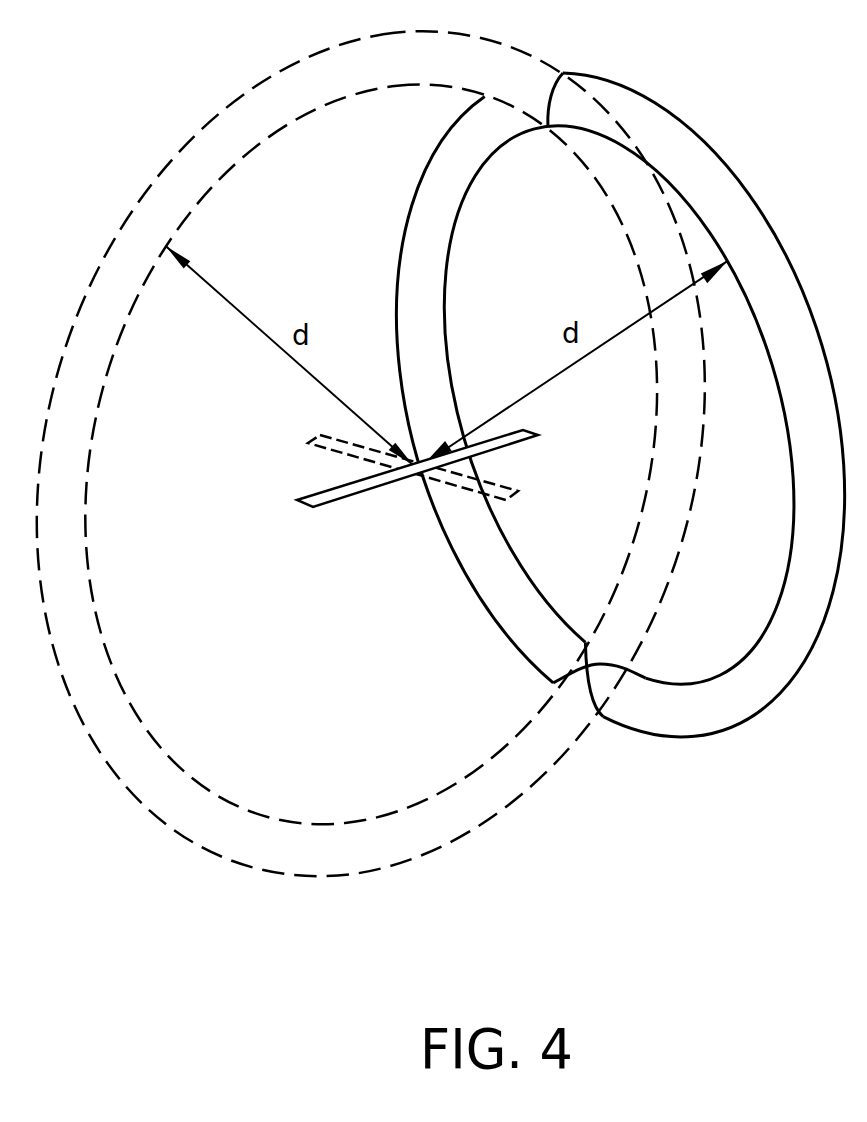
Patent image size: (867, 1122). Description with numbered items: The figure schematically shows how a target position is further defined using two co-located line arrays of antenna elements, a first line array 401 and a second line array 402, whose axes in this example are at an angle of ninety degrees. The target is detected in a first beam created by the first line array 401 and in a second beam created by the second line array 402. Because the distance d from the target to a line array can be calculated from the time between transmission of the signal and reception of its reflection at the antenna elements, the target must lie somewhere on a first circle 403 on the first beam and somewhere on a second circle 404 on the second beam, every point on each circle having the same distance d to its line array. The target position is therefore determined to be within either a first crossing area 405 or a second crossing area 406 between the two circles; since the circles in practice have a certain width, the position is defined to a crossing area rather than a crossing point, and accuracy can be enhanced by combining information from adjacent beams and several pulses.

The first line array 401 is at (350, 498).
The second line array 402 is at (337, 452).
The first circle 403 is at (705, 173).
The second circle 404 is at (183, 167).
The first crossing area 405 is at (598, 91).
The second crossing area 406 is at (647, 707).